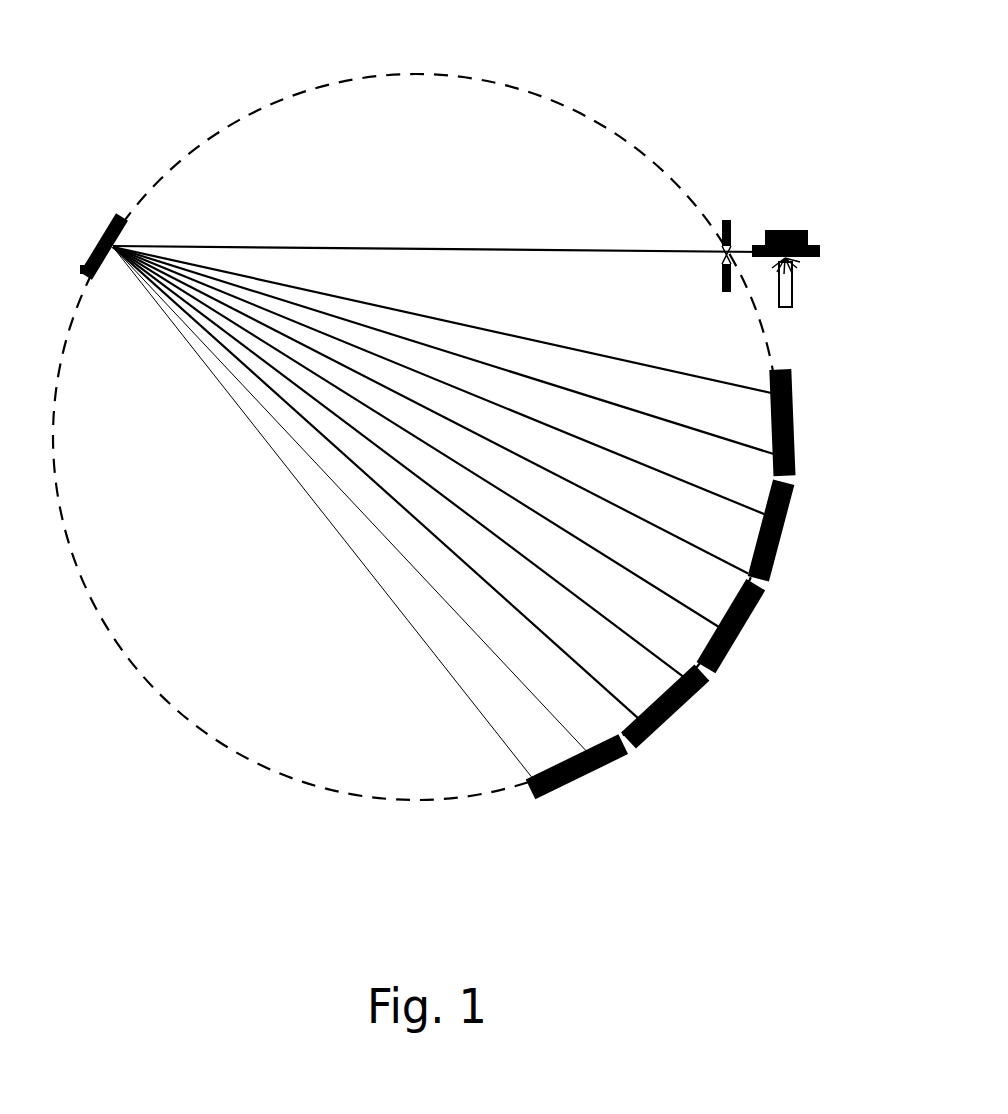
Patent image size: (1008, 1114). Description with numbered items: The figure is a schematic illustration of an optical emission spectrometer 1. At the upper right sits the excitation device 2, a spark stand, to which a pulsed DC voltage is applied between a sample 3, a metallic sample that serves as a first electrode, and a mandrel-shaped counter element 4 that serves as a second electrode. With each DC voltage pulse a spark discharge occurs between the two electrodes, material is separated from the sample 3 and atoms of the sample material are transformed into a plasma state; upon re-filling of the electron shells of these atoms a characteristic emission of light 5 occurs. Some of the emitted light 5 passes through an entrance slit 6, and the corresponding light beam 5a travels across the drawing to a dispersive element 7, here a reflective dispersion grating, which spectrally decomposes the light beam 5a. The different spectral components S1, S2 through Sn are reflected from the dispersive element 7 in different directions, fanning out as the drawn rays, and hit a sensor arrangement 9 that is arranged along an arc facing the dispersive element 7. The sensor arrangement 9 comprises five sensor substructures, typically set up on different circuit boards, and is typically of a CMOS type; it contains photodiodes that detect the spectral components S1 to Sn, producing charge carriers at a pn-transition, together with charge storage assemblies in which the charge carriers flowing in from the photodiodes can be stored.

The optical emission spectrometer 1 is at (124, 98).
The excitation device 2 is at (813, 240).
The sample 3 is at (795, 232).
The counter element 4 is at (800, 309).
The emitted light 5 is at (799, 264).
The light beam 5a is at (410, 248).
The entrance slit 6 is at (724, 220).
The dispersive element 7 is at (102, 222).
The sensor arrangement 9 is at (673, 722).
The first spectral component S1 is at (610, 356).
The second spectral component S2 is at (642, 408).
The n-th spectral component Sn is at (420, 638).